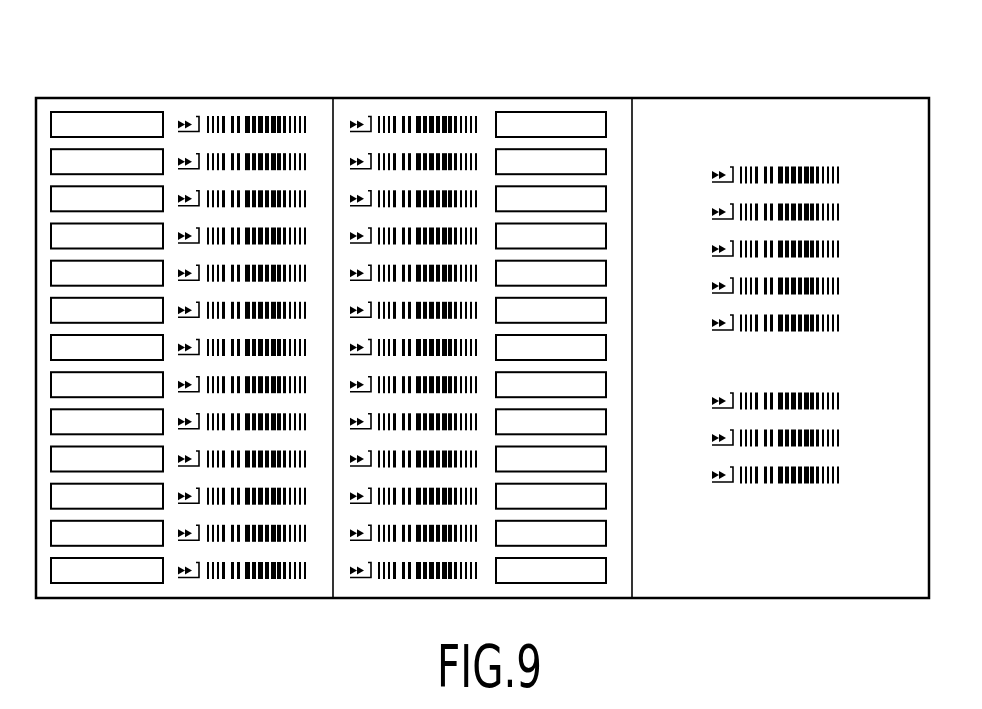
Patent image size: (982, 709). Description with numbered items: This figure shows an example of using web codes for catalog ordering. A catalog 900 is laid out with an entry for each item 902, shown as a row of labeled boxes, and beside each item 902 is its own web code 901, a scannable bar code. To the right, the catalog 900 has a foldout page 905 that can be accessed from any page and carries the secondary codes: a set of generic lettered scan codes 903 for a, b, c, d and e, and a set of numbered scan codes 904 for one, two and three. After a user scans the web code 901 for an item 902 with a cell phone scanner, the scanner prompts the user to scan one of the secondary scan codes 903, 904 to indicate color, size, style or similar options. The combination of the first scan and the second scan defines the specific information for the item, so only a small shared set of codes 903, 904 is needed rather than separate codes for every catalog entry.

The catalog 900 is at (242, 598).
The web code 901 is at (430, 153).
The item 902 is at (115, 148).
The scan codes a, b, c, d and e 903 is at (812, 168).
The scan codes 1, 2, 3 904 is at (813, 483).
The foldout page 905 is at (905, 593).